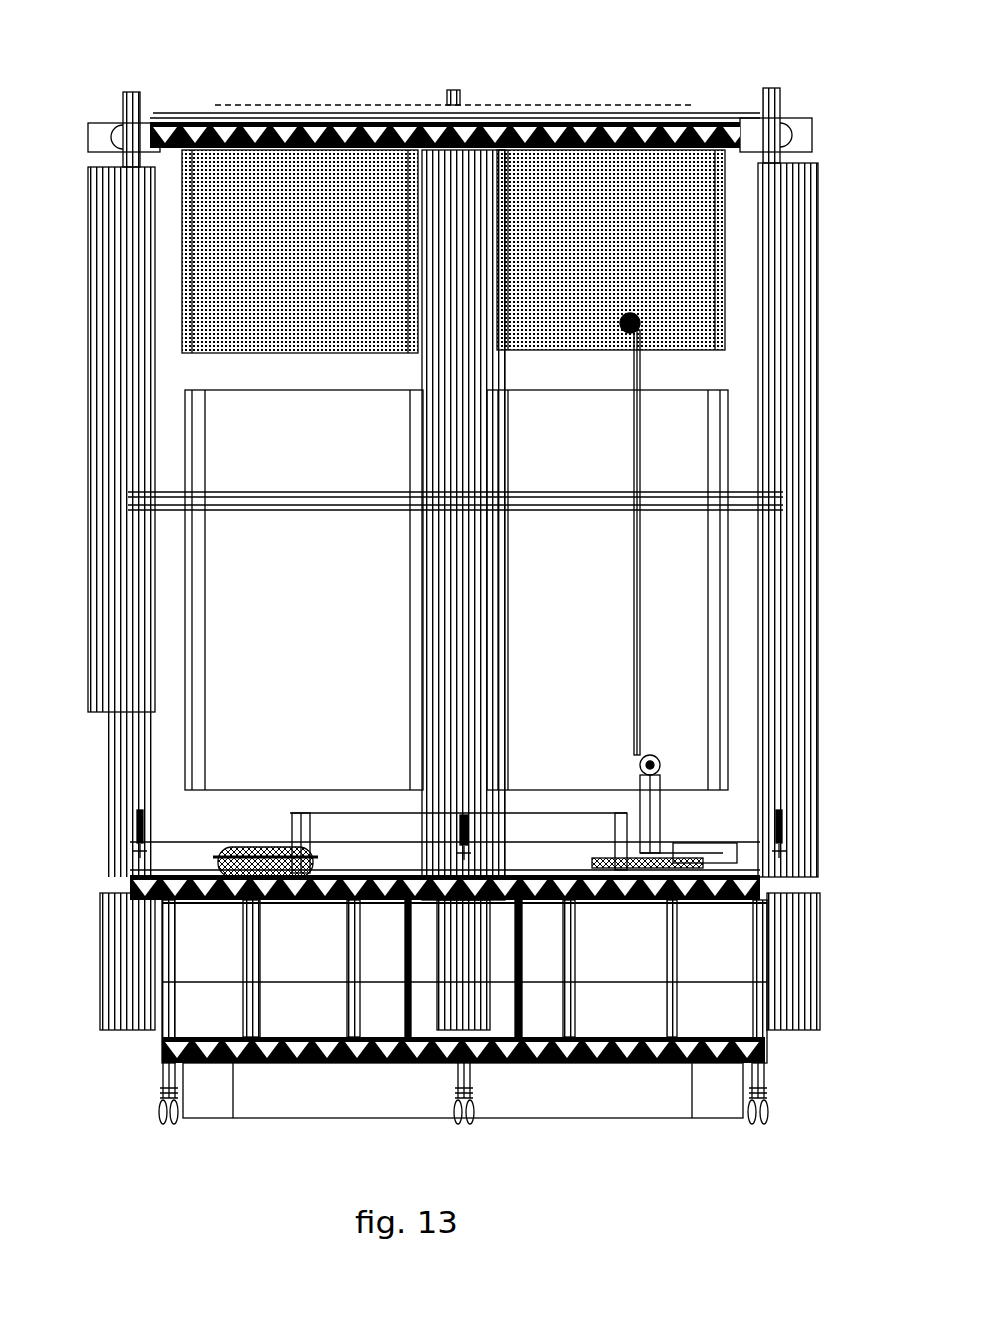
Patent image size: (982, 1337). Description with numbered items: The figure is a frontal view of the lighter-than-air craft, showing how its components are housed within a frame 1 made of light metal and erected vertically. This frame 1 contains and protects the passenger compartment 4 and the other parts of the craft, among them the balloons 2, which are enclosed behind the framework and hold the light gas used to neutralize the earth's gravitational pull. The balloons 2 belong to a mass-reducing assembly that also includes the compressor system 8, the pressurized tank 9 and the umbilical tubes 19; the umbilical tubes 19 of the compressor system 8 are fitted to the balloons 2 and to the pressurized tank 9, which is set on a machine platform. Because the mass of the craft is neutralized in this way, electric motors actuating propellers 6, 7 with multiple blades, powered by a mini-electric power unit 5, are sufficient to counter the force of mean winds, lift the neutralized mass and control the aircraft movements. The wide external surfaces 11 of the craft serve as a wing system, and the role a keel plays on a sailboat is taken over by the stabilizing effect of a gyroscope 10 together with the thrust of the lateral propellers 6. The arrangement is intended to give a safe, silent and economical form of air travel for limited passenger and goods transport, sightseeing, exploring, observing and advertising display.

The frame 1 is at (450, 517).
The balloons 2 is at (582, 438).
The passenger compartment 4 is at (270, 990).
The mini-electric power unit 5 is at (218, 863).
The lateral propellers 6 is at (665, 120).
The propellers 7 is at (103, 598).
The compressor system 8 is at (730, 843).
The pressurized tank 9 is at (713, 900).
The gyroscope 10 is at (363, 903).
The external surfaces 11 is at (742, 400).
The umbilical tubes 19 is at (675, 858).